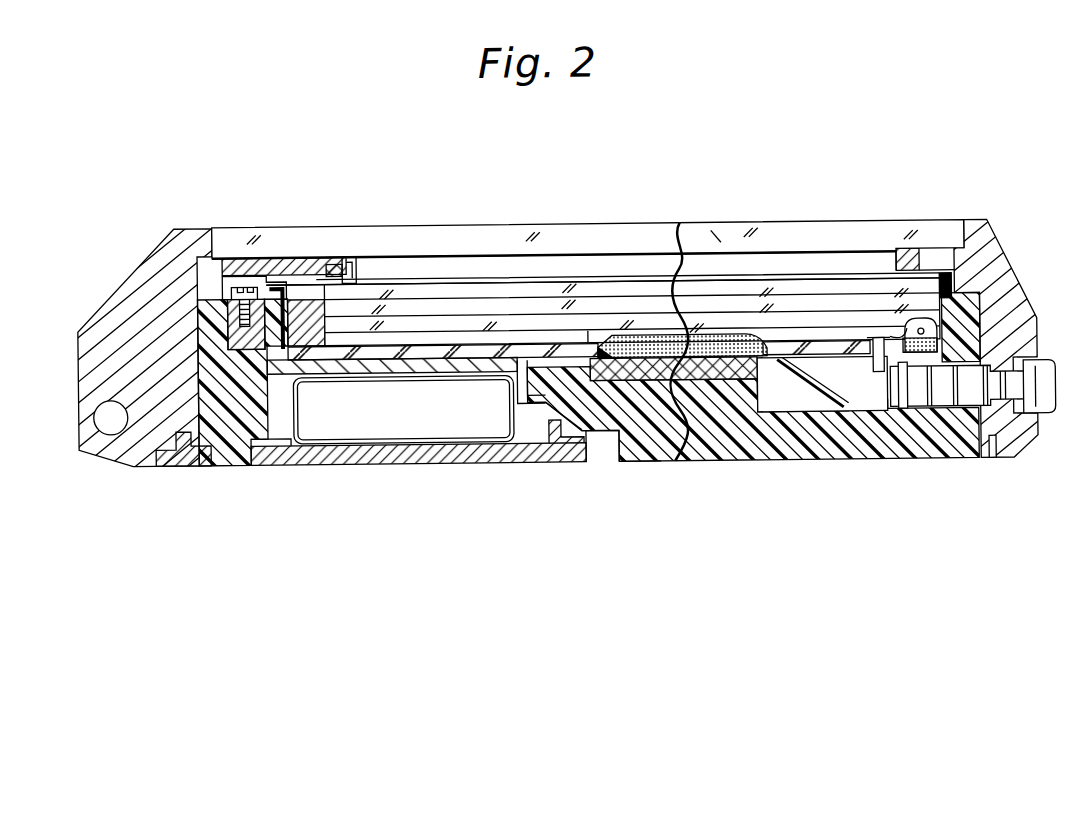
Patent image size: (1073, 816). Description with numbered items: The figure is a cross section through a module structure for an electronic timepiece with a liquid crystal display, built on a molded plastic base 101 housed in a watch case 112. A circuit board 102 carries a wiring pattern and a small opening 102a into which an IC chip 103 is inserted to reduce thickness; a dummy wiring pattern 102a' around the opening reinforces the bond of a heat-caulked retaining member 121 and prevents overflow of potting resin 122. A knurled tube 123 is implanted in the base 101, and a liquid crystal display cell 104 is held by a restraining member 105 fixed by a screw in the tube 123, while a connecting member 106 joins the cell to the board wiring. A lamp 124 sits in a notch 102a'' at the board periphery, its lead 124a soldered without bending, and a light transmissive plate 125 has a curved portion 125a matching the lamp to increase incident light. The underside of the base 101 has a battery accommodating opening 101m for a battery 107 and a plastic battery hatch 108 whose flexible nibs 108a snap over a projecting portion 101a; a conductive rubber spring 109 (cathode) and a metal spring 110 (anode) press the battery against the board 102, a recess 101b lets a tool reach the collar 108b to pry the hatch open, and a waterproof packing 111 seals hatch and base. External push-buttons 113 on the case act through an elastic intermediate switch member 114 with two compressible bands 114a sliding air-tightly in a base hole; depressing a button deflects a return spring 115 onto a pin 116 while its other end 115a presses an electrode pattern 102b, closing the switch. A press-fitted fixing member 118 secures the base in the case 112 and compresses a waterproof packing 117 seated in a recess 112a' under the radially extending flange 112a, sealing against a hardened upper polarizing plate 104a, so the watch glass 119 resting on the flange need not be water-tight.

The plastic base 101 is at (743, 454).
The projecting portion 101a is at (217, 459).
The recess 101b is at (600, 441).
The battery accommodating opening 101m is at (540, 407).
The circuit board 102 is at (827, 348).
The small opening 102a is at (695, 256).
The dummy wiring pattern 102a' is at (781, 446).
The notch 102a'' is at (928, 243).
The electrode pattern 102b is at (790, 366).
The IC chip 103 is at (742, 339).
The liquid crystal display cell 104 is at (512, 296).
The upper polarizing plate 104a is at (395, 279).
The restraining member 105 is at (258, 264).
The connecting member 106 is at (305, 307).
The battery 107 is at (415, 422).
The battery hatch 108 is at (412, 451).
The flexible plastic nibs 108a is at (278, 412).
The collar 108b is at (567, 452).
The spring 109 is at (370, 421).
The spring 110 is at (518, 400).
The waterproof packing 111 is at (263, 411).
The watch case 112 is at (162, 273).
The radially extending flange 112a is at (231, 255).
The recess 112a' is at (360, 224).
The external push-button 113 is at (1058, 403).
The intermediate switch member 114 is at (907, 409).
The compressible bands 114a is at (913, 406).
The return spring 115 is at (857, 411).
The other end of return spring 115a is at (800, 375).
The pin 116 is at (880, 340).
The waterproof packing 117 is at (332, 263).
The fixing member 118 is at (993, 463).
The watch glass 119 is at (717, 240).
The retaining member 121 is at (655, 386).
The potting resin 122 is at (679, 223).
The tube 123 is at (213, 224).
The lamp 124 is at (955, 275).
The lead 124a is at (922, 337).
The light transmissive plate 125 is at (593, 330).
The curved portion 125a is at (893, 333).